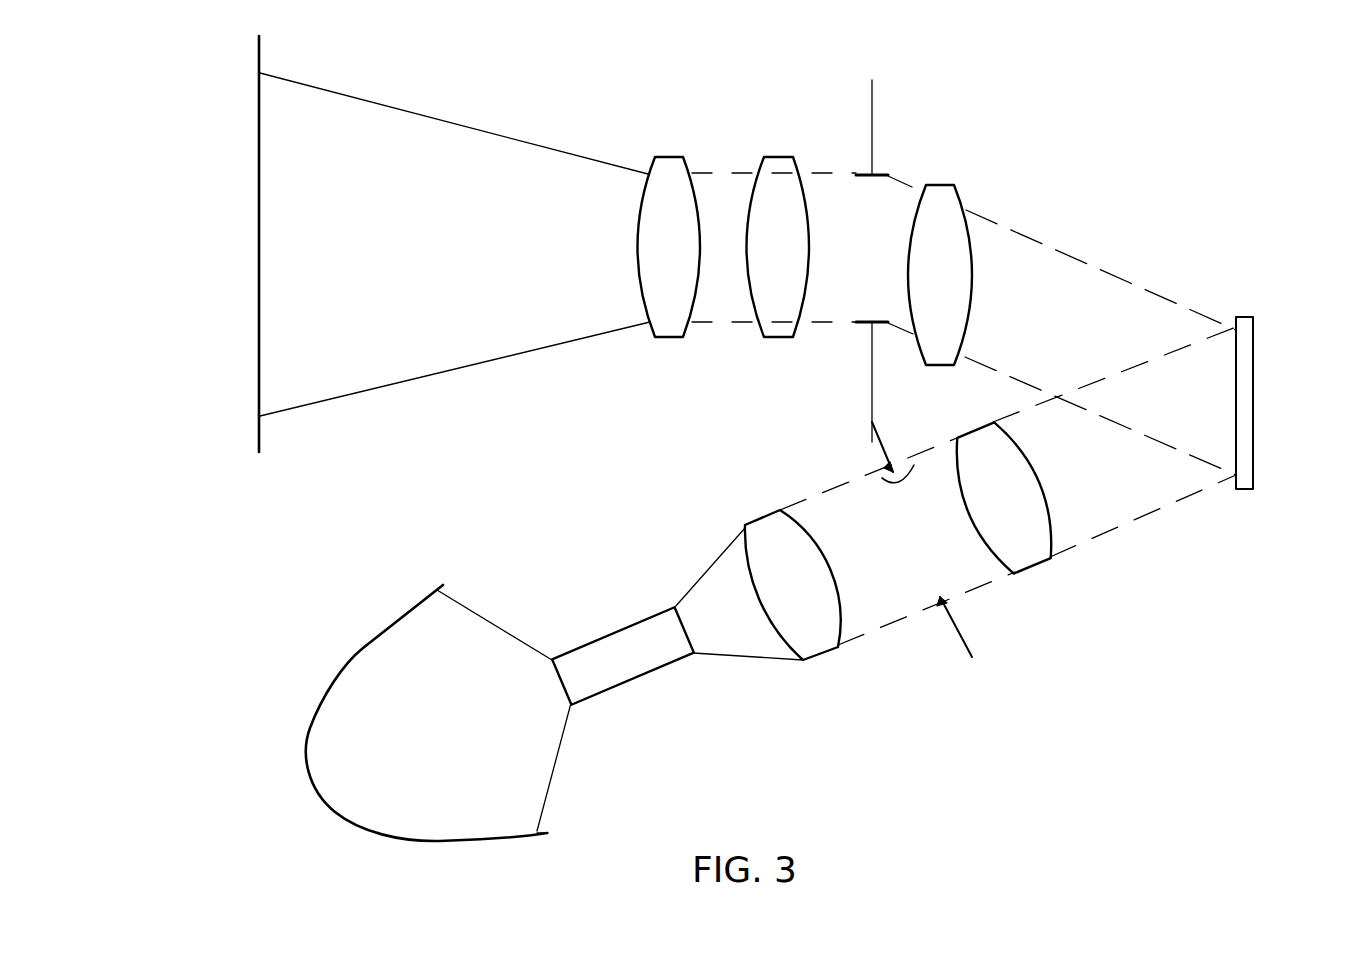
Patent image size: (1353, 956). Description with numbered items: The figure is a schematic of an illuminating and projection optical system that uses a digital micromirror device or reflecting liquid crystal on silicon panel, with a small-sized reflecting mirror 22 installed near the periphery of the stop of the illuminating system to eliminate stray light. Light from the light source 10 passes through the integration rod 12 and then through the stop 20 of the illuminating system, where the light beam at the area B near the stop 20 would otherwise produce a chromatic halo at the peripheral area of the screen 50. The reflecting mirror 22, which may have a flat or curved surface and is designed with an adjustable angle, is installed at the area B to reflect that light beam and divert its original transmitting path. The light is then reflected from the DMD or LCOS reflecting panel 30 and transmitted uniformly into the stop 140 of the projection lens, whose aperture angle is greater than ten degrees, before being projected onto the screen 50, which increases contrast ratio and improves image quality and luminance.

The light source 10 is at (365, 648).
The integration rod 12 is at (622, 630).
The stop of an illuminating system 20 is at (898, 617).
The reflecting mirror 22 is at (892, 487).
The reflecting panel (DMD or LCOS) 30 is at (1255, 335).
The screen 50 is at (258, 199).
The stop of a projection lens 140 is at (873, 112).
The area B is at (898, 458).